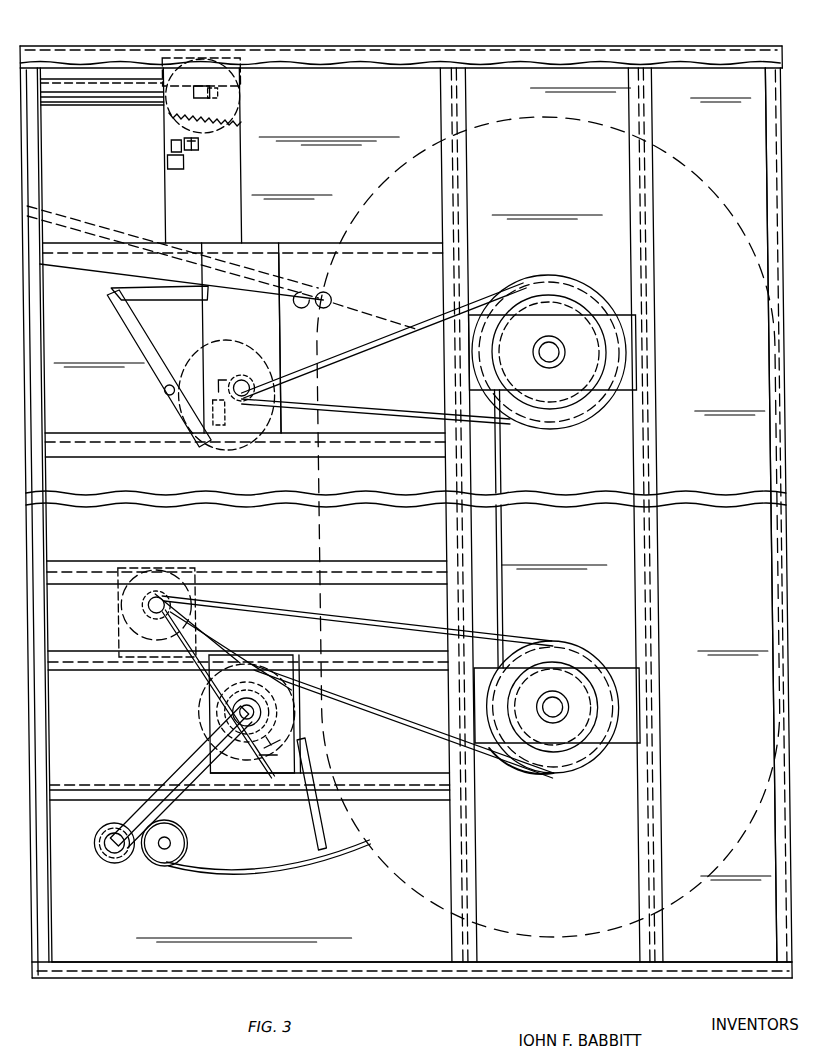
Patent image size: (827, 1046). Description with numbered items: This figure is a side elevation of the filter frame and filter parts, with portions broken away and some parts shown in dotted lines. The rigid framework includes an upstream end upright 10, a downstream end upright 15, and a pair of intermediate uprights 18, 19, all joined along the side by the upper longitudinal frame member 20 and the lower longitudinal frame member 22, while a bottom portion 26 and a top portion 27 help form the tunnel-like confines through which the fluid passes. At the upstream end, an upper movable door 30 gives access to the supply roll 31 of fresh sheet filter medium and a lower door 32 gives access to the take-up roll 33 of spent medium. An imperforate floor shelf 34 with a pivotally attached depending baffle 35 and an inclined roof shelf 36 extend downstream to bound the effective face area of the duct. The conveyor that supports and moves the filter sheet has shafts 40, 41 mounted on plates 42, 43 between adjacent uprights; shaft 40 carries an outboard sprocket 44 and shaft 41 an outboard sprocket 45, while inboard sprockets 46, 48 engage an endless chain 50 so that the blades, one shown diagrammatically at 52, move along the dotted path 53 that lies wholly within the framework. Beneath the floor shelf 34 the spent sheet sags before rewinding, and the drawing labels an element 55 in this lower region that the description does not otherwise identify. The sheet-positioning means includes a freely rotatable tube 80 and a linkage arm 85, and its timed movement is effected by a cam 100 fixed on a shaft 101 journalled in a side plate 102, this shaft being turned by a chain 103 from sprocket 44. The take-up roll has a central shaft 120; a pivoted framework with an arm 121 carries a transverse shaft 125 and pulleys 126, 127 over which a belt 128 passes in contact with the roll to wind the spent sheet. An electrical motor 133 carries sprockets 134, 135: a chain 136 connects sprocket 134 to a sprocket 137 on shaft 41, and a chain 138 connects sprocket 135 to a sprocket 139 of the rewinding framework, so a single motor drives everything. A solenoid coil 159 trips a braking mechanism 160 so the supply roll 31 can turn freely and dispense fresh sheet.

The upstream end upright 10 is at (42, 547).
The downstream end upright 15 is at (765, 595).
The intermediate upright 18 is at (468, 172).
The intermediate upright 19 is at (626, 168).
The upper longitudinal frame member 20 is at (406, 68).
The lower longitudinal frame member 22 is at (307, 962).
The bottom portion 26 is at (97, 980).
The top portion 27 is at (458, 46).
The upper movable door 30 is at (40, 162).
The supply roll 31 is at (240, 98).
The lower door 32 is at (36, 916).
The take-up roll 33 is at (159, 864).
The floor shelf 34 is at (74, 670).
The depending baffle 35 is at (316, 764).
The roof shelf 36 is at (84, 222).
The conveyor shaft 40 is at (545, 352).
The conveyor shaft 41 is at (539, 706).
The shaft mounting plate 42 is at (615, 314).
The shaft mounting plate 43 is at (615, 743).
The sprocket 44 is at (553, 288).
The sprocket 45 is at (570, 769).
The conveyor sprocket 46 is at (537, 424).
The conveyor sprocket 48 is at (550, 650).
The endless chain 50 is at (515, 504).
The conveyor blade 52 is at (407, 338).
The dotted path 53 is at (302, 482).
The arcuate guide 55 is at (267, 874).
The rotatable tube 80 is at (330, 294).
The linkage arm 85 is at (180, 298).
The cam 100 is at (223, 343).
The cam shaft 101 is at (250, 384).
The side plate 102 is at (269, 326).
The chain 103 is at (406, 408).
The central shaft of take-up roll 120 is at (160, 843).
The arm 121 is at (150, 766).
The transverse shaft 125 is at (102, 844).
The pulley 126 is at (230, 701).
The pulley 127 is at (115, 860).
The belt 128 is at (180, 739).
The electrical motor 133 is at (114, 601).
The motor sprocket 134 is at (149, 613).
The motor sprocket 135 is at (153, 589).
The chain 136 is at (348, 691).
The sprocket 137 is at (523, 780).
The chain 138 is at (180, 696).
The sprocket 139 is at (239, 748).
The solenoid coil 159 is at (165, 162).
The braking mechanism 160 is at (202, 151).